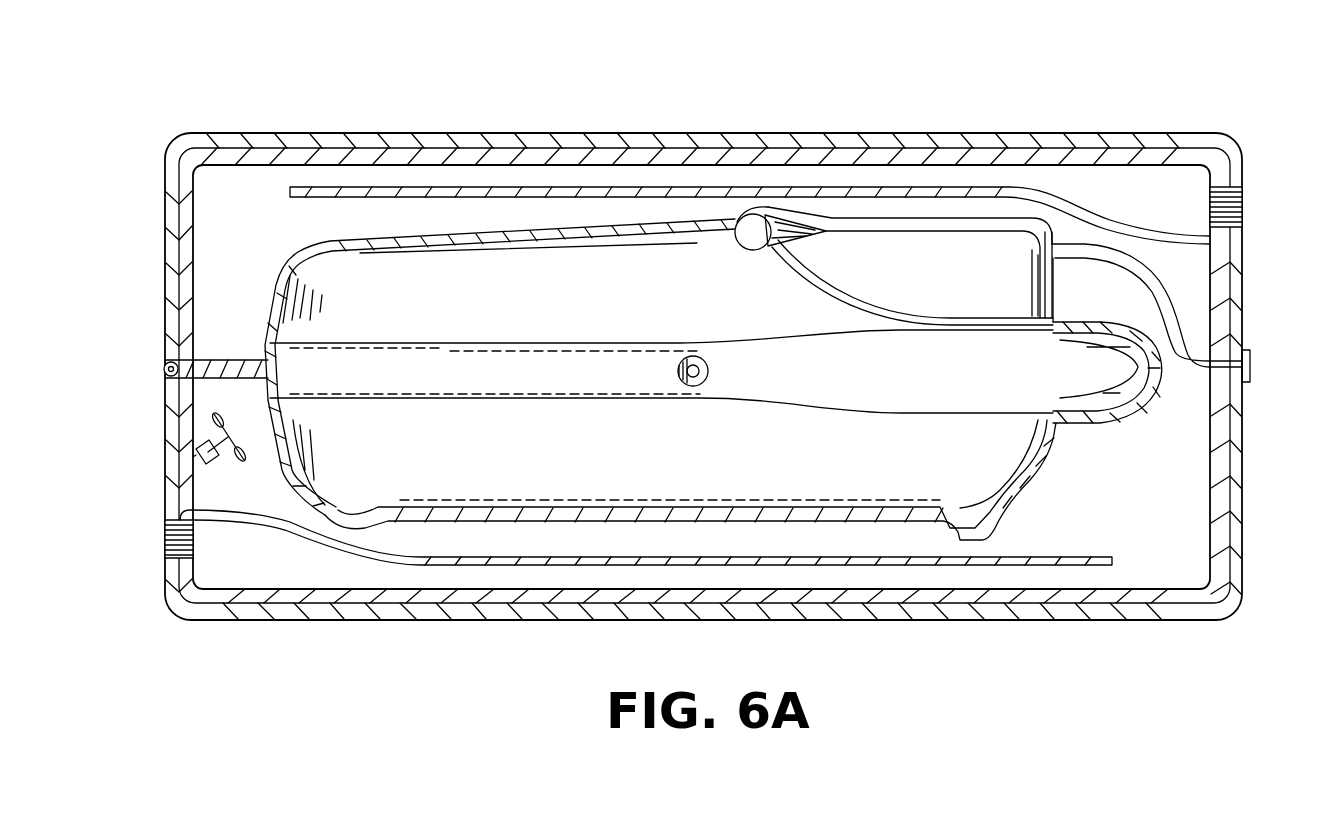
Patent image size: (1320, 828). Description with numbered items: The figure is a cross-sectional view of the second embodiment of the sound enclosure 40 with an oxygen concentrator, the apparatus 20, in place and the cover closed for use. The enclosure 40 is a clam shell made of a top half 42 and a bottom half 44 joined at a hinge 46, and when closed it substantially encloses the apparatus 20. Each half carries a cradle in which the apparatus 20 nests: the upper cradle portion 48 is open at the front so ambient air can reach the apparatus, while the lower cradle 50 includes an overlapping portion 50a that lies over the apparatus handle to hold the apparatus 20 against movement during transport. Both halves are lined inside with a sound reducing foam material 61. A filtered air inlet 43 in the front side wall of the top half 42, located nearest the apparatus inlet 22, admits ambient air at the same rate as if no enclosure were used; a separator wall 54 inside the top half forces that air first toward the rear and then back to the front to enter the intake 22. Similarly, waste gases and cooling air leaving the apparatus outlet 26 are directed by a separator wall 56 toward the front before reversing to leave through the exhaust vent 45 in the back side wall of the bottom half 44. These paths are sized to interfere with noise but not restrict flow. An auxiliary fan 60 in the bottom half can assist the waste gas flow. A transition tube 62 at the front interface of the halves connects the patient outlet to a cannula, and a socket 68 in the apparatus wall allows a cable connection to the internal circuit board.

The sound enclosure 40 is at (866, 125).
The top half 42 is at (585, 133).
The bottom half 44 is at (586, 620).
The sound reducing foam material 61 is at (737, 150).
The filtered air inlet 43 is at (1243, 212).
The exhaust vent 45 is at (194, 548).
The hinge 46 is at (165, 362).
The auxiliary fan 60 is at (220, 455).
The separator wall 54 is at (470, 197).
The separator wall 56 is at (1062, 557).
The cradle portion 48 is at (355, 240).
The lower cradle 50 is at (1062, 452).
The overlapping portion 50a is at (1124, 330).
The apparatus 20 is at (531, 457).
The outlet 26 is at (290, 440).
The socket 68 is at (690, 387).
The inlet 22 is at (798, 236).
The transition tube 62 is at (1147, 267).